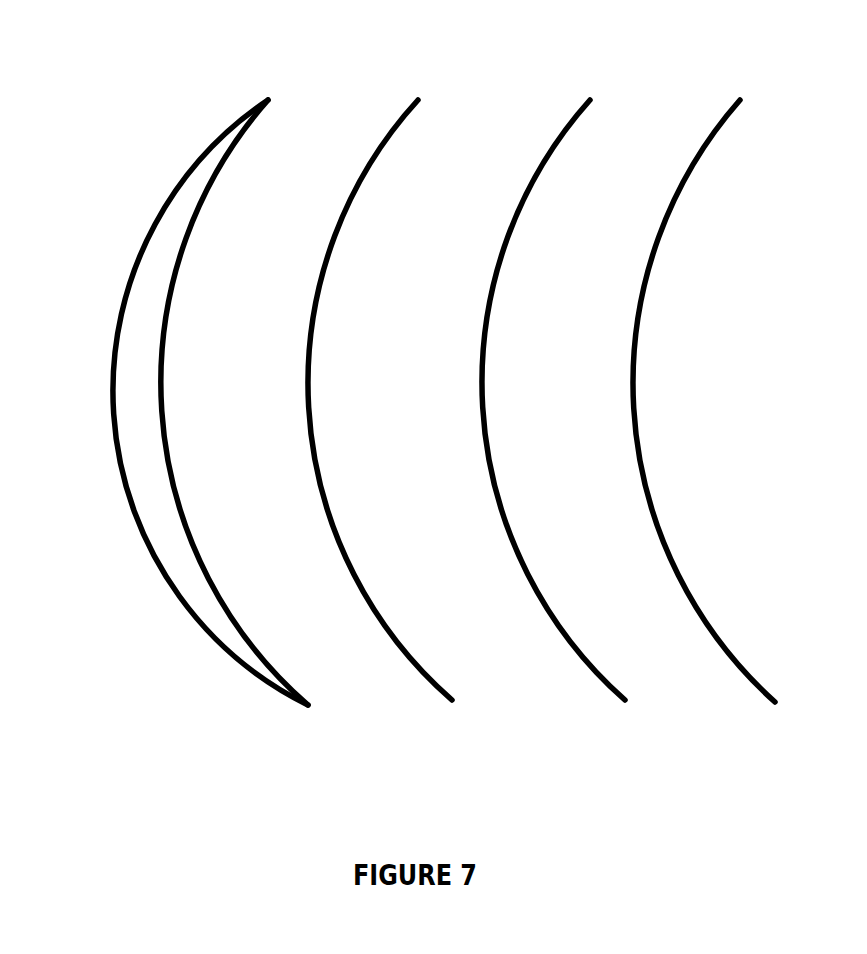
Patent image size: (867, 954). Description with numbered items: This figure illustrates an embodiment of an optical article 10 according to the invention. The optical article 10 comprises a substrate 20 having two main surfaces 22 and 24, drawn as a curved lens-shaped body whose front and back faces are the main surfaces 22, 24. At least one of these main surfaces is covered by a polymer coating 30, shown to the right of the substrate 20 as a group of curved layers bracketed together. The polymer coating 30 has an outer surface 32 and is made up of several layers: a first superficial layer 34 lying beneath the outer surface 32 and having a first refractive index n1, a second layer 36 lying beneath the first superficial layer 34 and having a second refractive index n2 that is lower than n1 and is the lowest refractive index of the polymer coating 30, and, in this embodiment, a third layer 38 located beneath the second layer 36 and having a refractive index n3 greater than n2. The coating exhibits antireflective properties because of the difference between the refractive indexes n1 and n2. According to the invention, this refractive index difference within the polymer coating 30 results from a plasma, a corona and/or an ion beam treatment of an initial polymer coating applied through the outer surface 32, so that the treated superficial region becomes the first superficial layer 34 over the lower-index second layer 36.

The optical article 10 is at (175, 423).
The substrate 20 is at (268, 690).
The main surface 22 is at (116, 331).
The main surface 24 is at (163, 331).
The polymer coating 30 is at (757, 97).
The outer surface 32 is at (637, 340).
The first superficial layer 34 is at (704, 447).
The second layer 36 is at (608, 692).
The third layer 38 is at (437, 692).